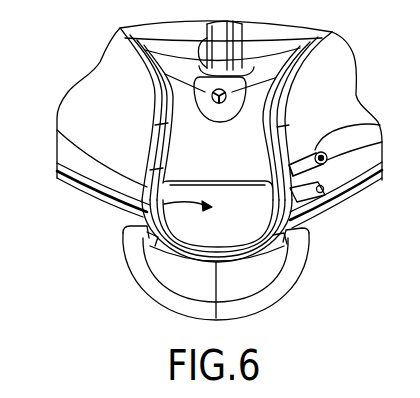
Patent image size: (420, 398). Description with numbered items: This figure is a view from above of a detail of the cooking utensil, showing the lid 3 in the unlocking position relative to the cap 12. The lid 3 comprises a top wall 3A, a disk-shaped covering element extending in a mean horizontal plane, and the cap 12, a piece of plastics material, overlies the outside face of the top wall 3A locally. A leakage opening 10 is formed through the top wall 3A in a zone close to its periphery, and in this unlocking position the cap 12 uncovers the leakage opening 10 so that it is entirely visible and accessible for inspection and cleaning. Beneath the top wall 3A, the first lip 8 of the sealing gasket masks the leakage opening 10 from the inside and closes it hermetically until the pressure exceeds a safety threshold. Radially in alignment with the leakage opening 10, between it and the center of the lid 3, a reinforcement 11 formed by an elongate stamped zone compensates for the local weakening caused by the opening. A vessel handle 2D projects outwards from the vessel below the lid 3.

The lid 3 is at (345, 63).
The top wall 3A is at (102, 103).
The reinforcement 11 is at (352, 124).
The first flexible lip 8 is at (319, 196).
The leakage opening 10 is at (313, 202).
The cap 12 is at (150, 207).
The vessel handle 2D is at (248, 277).